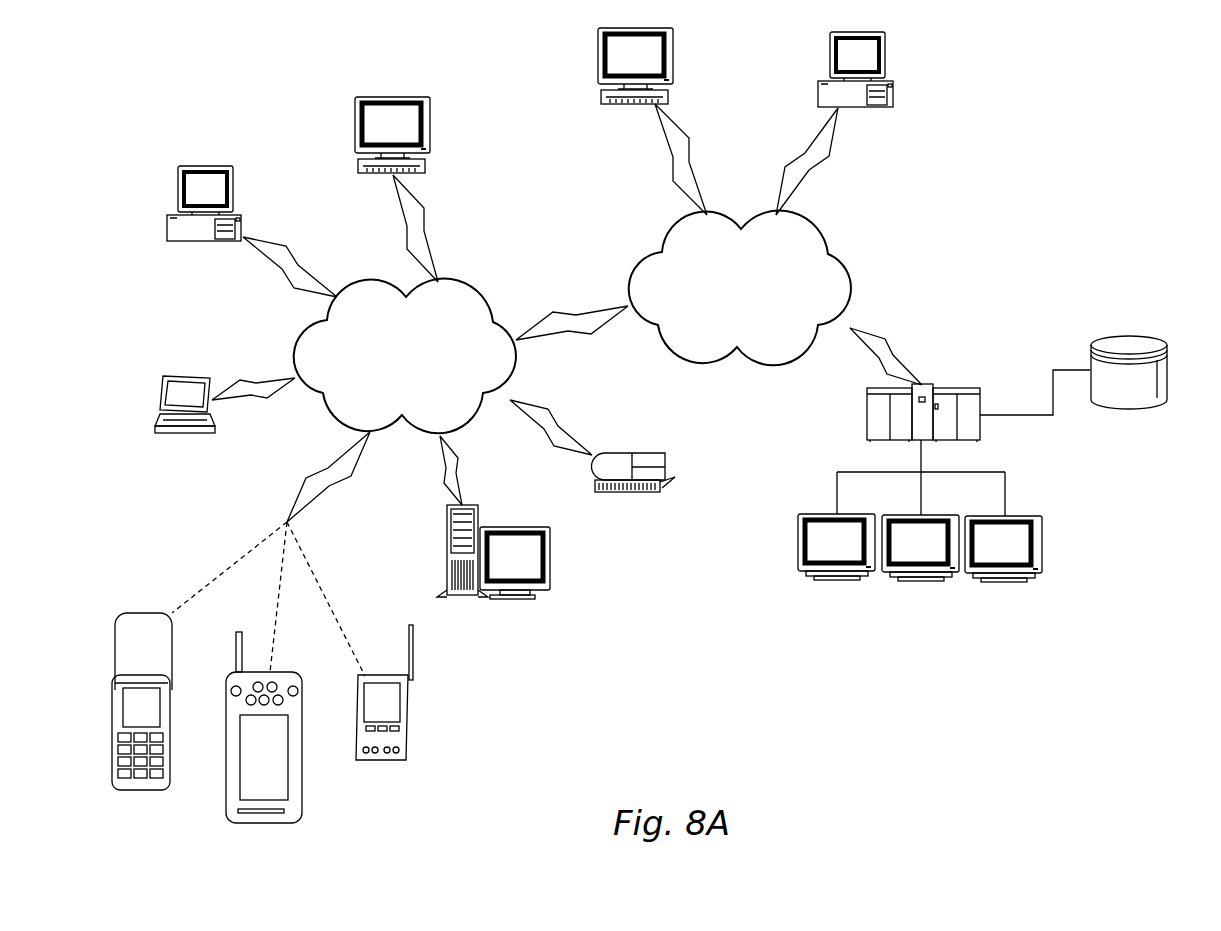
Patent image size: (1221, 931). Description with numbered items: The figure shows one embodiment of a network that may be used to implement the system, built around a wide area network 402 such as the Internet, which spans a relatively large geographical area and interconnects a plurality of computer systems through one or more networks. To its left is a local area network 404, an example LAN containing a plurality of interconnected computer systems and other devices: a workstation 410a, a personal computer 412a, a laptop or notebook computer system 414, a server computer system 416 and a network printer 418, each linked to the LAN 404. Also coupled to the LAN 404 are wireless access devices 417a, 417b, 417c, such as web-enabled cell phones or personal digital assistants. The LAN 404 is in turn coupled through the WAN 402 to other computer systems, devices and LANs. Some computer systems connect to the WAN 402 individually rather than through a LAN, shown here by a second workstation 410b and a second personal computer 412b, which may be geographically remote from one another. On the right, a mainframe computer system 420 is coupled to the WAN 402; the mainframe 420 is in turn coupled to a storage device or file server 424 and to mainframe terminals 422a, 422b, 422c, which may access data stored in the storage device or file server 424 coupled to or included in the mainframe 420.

The wide area network 402 is at (720, 333).
The local area network 404 is at (385, 401).
The workstation 410a is at (410, 175).
The workstation 410b is at (613, 104).
The personal computer 412a is at (205, 243).
The personal computer 412b is at (876, 108).
The laptop or notebook computer system 414 is at (183, 435).
The server computer system 416 is at (512, 598).
The wireless access device 417a is at (133, 791).
The wireless access device 417b is at (262, 824).
The wireless access device 417c is at (386, 763).
The network printer 418 is at (634, 493).
The mainframe computer system 420 is at (952, 386).
The mainframe terminal 422a is at (836, 582).
The mainframe terminal 422b is at (917, 583).
The mainframe terminal 422c is at (1002, 580).
The storage device or file server 424 is at (1148, 410).